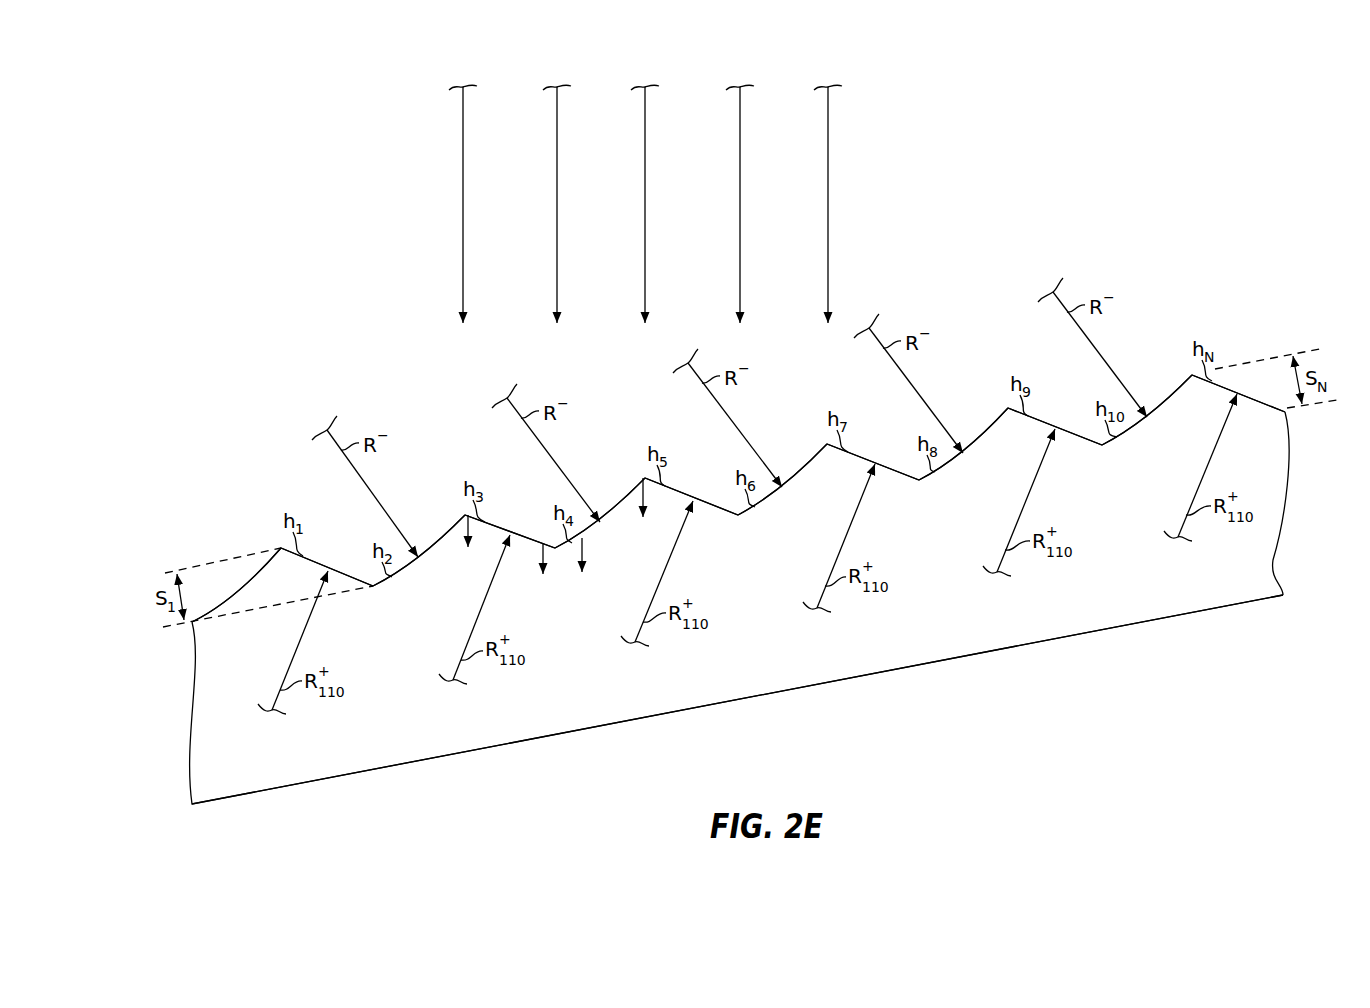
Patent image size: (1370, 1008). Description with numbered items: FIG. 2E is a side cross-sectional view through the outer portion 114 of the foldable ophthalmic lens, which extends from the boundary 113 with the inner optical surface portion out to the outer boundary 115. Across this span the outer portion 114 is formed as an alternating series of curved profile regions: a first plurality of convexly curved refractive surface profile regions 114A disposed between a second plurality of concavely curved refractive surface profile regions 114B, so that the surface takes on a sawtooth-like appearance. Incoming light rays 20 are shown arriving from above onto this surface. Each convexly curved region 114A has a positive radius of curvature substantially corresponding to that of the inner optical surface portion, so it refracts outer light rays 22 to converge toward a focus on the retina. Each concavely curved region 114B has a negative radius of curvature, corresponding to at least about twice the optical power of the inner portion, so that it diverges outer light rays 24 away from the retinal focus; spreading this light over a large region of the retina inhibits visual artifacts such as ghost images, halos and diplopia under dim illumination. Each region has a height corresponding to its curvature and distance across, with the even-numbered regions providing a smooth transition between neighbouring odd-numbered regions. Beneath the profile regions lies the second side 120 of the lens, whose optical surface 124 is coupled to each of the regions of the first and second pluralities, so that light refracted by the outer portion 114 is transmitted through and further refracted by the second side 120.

The light rays 20 is at (463, 147).
The outer light rays 22 is at (467, 538).
The divergent outer light rays 24 is at (578, 566).
The boundary 113 is at (280, 547).
The outer portion 114 is at (959, 227).
The convexly curved refractive surface profile regions 114A is at (327, 527).
The concavely curved refractive surface profile regions 114B is at (423, 573).
The outer boundary 115 is at (1279, 573).
The second side 120 is at (332, 778).
The optical surface 124 is at (447, 756).